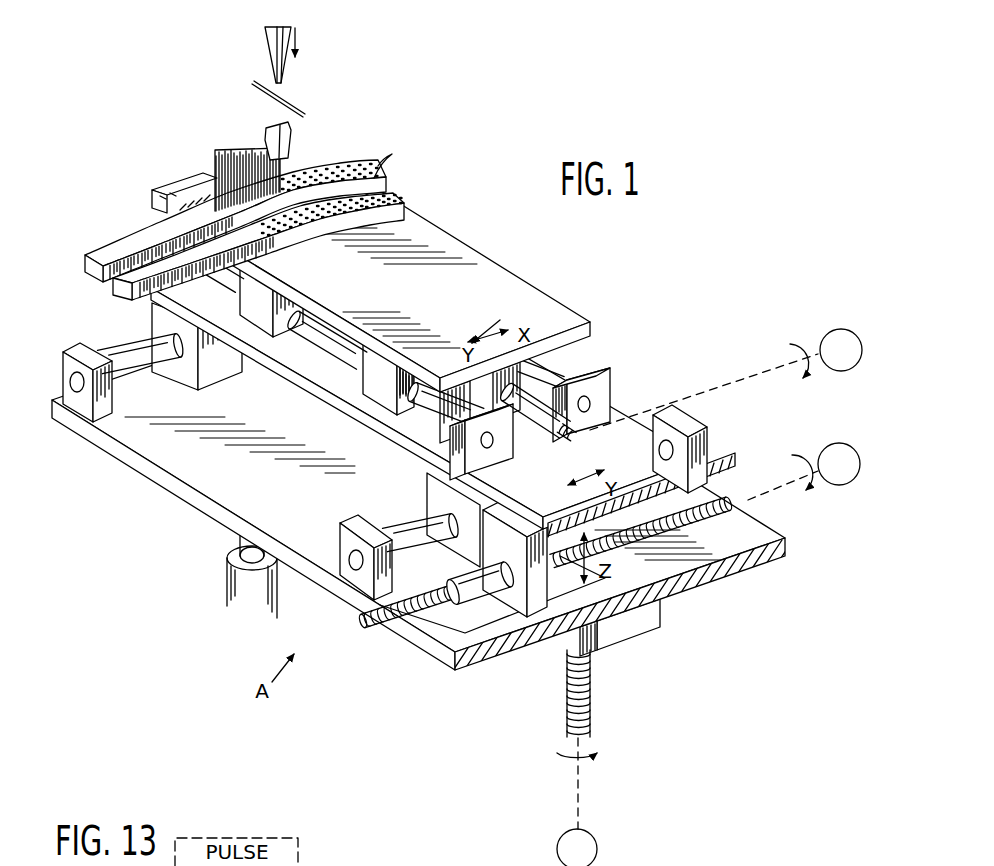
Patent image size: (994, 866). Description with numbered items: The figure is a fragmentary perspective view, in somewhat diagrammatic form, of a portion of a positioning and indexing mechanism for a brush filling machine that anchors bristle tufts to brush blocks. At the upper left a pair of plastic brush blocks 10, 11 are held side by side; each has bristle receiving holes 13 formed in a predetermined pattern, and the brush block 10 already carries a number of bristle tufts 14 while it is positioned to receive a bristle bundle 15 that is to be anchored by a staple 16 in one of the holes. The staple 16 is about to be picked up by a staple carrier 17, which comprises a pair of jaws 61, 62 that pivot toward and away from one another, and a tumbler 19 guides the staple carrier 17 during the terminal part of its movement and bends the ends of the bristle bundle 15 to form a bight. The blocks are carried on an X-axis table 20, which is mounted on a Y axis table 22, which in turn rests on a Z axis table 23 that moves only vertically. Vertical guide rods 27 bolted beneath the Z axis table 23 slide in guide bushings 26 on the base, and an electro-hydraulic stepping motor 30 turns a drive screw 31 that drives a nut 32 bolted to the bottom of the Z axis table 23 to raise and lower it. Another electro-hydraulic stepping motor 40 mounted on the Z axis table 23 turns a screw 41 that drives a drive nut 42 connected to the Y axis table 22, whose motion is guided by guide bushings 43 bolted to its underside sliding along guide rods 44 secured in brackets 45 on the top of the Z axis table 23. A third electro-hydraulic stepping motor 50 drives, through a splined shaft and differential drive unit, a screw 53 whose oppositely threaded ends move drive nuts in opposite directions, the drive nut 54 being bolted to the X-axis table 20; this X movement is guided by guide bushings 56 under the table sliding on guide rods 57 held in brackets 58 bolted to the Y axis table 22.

The brush block 10 is at (88, 252).
The brush block 11 is at (114, 292).
The bristle receiving holes 13 is at (377, 175).
The bristle tufts 14 is at (212, 172).
The bristle bundle 15 is at (252, 84).
The staple 16 is at (280, 90).
The staple carrier 17 is at (289, 70).
The tumbler 19 is at (297, 135).
The X-axis table 20 is at (447, 234).
The Y axis table 22 is at (288, 368).
The Z axis table 23 is at (127, 452).
The guide bushings 26 is at (237, 584).
The vertical guide rods 27 is at (240, 549).
The electro-hydraulic stepping motor 30 is at (598, 849).
The drive screw 31 is at (592, 682).
The nut 32 is at (638, 624).
The electro-hydraulic stepping motor 40 is at (846, 445).
The screw 41 is at (652, 531).
The drive nut 42 is at (458, 600).
The guide bushings 43 is at (152, 327).
The guide rods 44 is at (136, 362).
The brackets 45 is at (65, 364).
The electro-hydraulic stepping motor 50 is at (845, 331).
The screw 53 is at (566, 436).
The drive nut 54 is at (538, 393).
The guide bushings 56 is at (250, 304).
The guide rods 57 is at (558, 378).
The brackets 58 is at (612, 388).
The jaw 61 is at (264, 49).
The jaw 62 is at (292, 34).